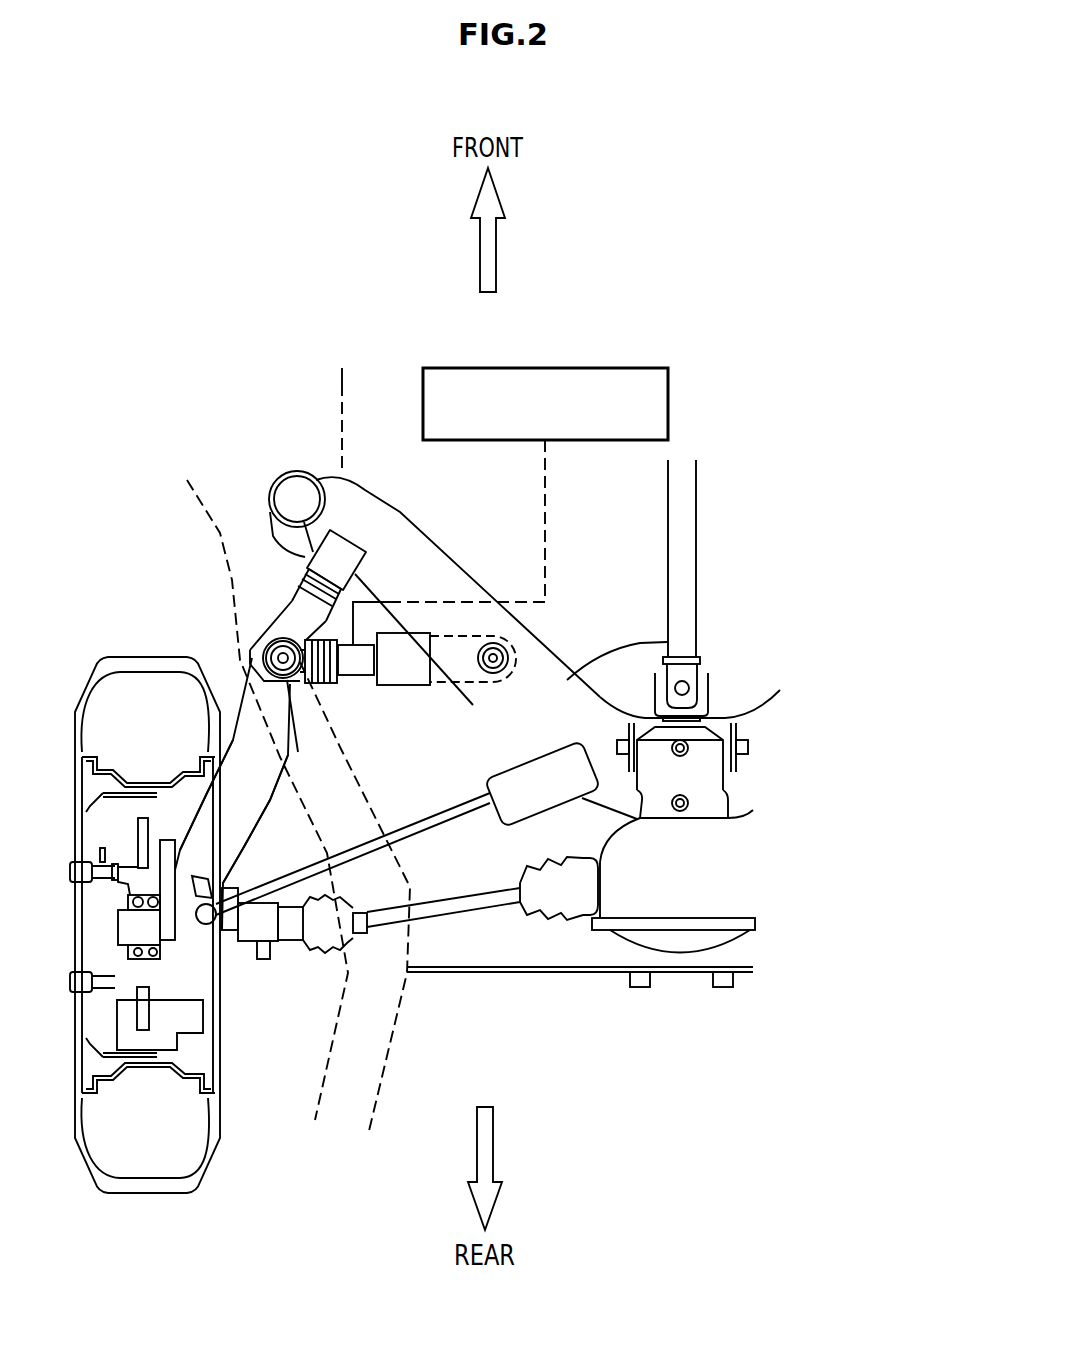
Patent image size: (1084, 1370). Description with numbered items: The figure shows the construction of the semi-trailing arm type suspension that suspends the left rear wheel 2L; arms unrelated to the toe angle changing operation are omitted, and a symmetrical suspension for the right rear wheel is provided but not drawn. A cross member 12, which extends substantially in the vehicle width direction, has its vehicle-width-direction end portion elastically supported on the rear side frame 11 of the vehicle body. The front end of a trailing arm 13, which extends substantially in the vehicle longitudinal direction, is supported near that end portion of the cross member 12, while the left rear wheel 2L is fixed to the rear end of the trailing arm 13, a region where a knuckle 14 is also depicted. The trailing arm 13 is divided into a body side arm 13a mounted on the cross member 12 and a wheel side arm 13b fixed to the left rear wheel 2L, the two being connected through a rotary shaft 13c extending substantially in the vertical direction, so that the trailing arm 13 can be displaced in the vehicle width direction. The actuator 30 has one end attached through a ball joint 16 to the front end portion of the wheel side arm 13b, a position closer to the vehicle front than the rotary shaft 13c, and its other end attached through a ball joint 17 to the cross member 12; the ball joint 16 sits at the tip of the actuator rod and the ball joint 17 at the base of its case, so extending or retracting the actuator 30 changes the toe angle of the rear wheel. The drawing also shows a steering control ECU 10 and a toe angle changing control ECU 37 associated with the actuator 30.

The steering control ECU 10 is at (598, 368).
The rear side frame 11 is at (342, 382).
The cross member 12 is at (667, 642).
The trailing arm 13 is at (247, 663).
The body side arm 13a is at (295, 553).
The wheel side arm 13b is at (227, 807).
The rotary shaft 13c is at (252, 648).
The knuckle 14 is at (162, 972).
The ball joint 16 is at (300, 729).
The ball joint 17 is at (507, 645).
The left rear wheel 2L is at (160, 1195).
The actuator 30 is at (446, 630).
The toe angle changing control ECU 37 is at (353, 675).